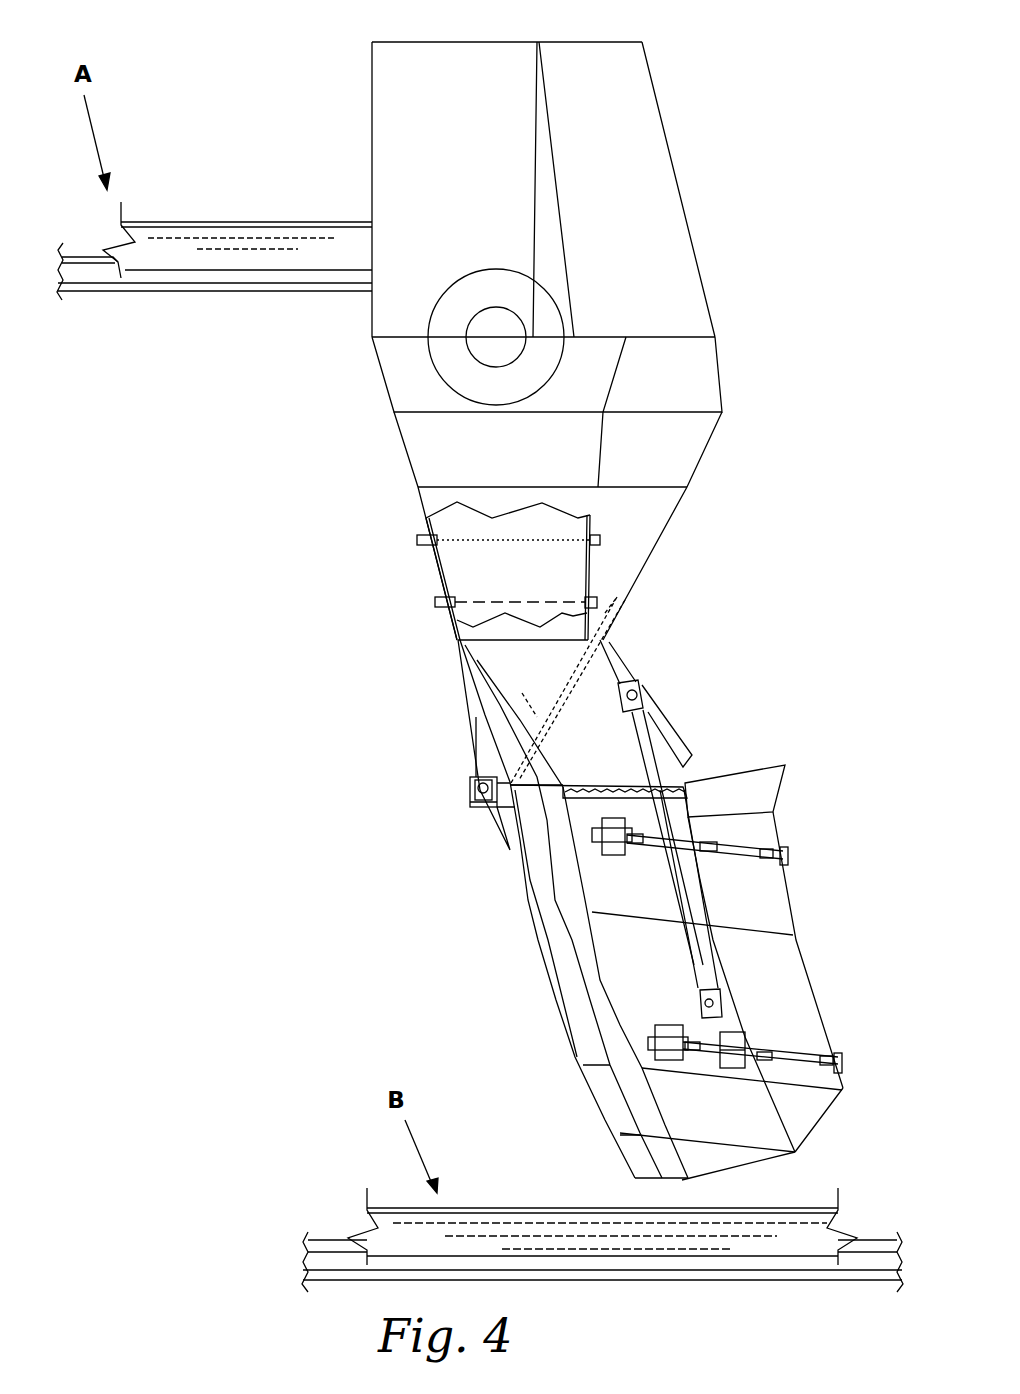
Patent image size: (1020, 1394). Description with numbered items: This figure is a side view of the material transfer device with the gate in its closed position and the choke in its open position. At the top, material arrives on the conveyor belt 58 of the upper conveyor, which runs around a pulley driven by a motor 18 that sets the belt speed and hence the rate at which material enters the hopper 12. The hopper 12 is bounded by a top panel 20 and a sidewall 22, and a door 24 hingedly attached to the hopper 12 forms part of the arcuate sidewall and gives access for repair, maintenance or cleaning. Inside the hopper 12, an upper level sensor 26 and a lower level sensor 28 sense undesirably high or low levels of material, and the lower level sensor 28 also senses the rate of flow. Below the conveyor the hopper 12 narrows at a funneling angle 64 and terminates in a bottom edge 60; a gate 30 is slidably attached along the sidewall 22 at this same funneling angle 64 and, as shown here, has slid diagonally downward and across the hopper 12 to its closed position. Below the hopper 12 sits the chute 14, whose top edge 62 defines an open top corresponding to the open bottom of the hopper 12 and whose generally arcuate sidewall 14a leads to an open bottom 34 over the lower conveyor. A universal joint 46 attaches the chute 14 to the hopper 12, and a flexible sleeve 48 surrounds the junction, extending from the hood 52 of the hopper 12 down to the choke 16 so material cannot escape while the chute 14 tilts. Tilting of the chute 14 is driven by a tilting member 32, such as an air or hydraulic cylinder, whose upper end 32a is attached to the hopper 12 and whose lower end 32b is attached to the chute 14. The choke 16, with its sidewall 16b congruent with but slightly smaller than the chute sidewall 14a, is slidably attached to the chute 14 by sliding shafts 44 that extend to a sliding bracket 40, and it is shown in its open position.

The hopper 12 is at (722, 386).
The chute 14 is at (545, 970).
The sidewall 14a is at (540, 937).
The choke 16 is at (735, 791).
The sidewall 16b is at (782, 957).
The motor 18 is at (496, 337).
The top panel 20 is at (562, 41).
The sidewall 22 is at (454, 189).
The door 24 is at (543, 189).
The upper level sensor 26 is at (425, 548).
The lower level sensor 28 is at (445, 613).
The gate 30 is at (541, 693).
The tilting member 32 is at (688, 942).
The upper end 32a is at (647, 693).
The lower end 32b is at (720, 1000).
The open bottom 34 is at (735, 1167).
The sliding bracket 40 is at (790, 853).
The sliding shafts 44 is at (748, 845).
The universal joint 46 is at (470, 788).
The flexible sleeve 48 is at (690, 798).
The hood 52 is at (670, 723).
The conveyor belt 58 is at (95, 255).
The bottom edge 60 is at (500, 764).
The top edge 62 is at (515, 850).
The funneling angle 64 is at (655, 528).